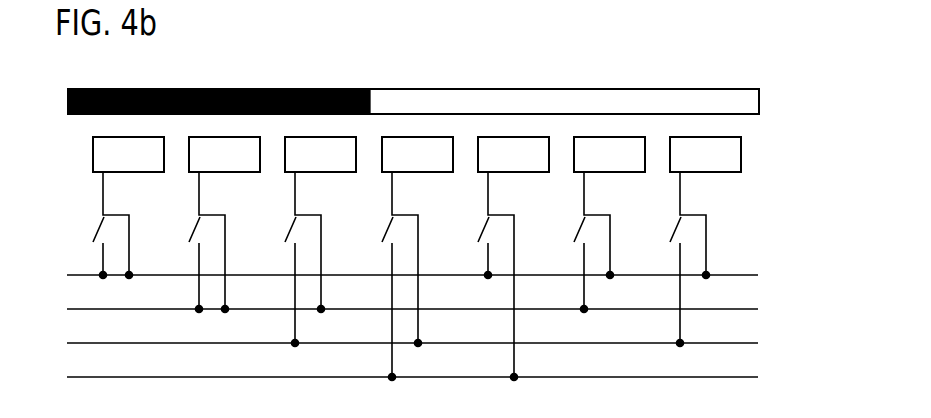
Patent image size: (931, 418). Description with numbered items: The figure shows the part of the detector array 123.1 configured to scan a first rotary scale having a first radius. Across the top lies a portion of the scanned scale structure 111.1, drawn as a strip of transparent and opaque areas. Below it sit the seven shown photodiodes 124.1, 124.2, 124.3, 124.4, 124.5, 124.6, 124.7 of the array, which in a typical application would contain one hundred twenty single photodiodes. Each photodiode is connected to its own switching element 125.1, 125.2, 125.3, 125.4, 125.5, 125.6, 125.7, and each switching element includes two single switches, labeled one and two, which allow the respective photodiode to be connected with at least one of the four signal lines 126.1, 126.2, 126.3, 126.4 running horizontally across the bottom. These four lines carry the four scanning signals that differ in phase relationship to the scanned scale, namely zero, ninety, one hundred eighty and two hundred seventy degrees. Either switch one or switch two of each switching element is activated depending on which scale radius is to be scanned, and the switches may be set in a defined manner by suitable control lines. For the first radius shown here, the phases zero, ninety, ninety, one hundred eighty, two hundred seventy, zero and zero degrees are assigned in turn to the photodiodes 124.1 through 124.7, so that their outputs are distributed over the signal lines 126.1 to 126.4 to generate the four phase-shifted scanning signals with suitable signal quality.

The scanned scale structure 111.1 is at (788, 103).
The detector array configuration 123.1 is at (768, 157).
The photodiode 124.1 is at (128, 154).
The photodiode 124.2 is at (224, 154).
The photodiode 124.3 is at (320, 154).
The photodiode 124.4 is at (417, 154).
The photodiode 124.5 is at (513, 154).
The photodiode 124.6 is at (609, 154).
The photodiode 124.7 is at (705, 154).
The switching element 125.1 is at (125, 213).
The switching element 125.2 is at (221, 213).
The switching element 125.3 is at (317, 213).
The switching element 125.4 is at (414, 213).
The switching element 125.5 is at (510, 213).
The switching element 125.6 is at (606, 213).
The switching element 125.7 is at (702, 213).
The signal line 126.1 is at (758, 275).
The signal line 126.2 is at (758, 309).
The signal line 126.3 is at (758, 343).
The signal line 126.4 is at (758, 377).